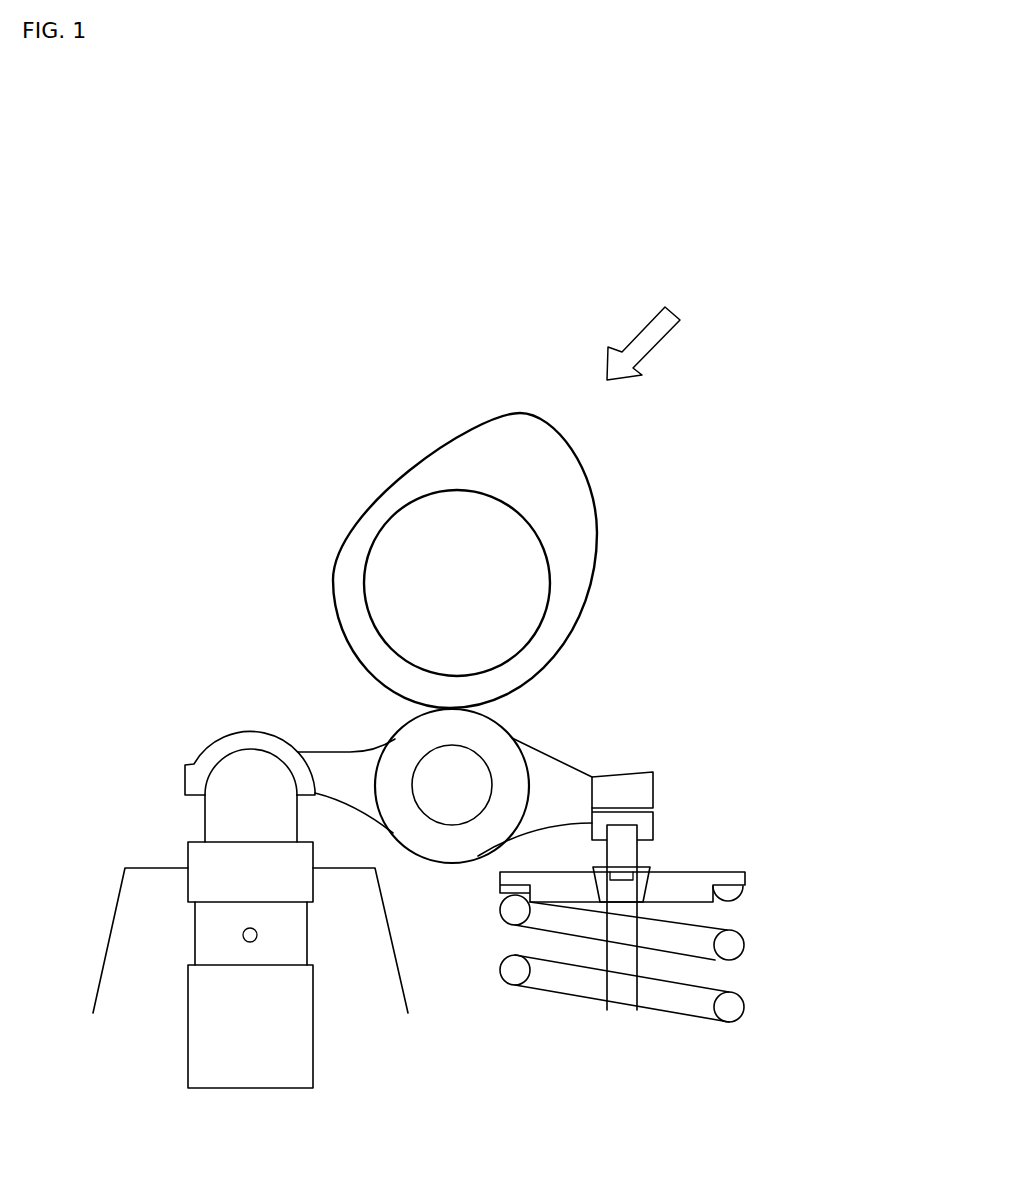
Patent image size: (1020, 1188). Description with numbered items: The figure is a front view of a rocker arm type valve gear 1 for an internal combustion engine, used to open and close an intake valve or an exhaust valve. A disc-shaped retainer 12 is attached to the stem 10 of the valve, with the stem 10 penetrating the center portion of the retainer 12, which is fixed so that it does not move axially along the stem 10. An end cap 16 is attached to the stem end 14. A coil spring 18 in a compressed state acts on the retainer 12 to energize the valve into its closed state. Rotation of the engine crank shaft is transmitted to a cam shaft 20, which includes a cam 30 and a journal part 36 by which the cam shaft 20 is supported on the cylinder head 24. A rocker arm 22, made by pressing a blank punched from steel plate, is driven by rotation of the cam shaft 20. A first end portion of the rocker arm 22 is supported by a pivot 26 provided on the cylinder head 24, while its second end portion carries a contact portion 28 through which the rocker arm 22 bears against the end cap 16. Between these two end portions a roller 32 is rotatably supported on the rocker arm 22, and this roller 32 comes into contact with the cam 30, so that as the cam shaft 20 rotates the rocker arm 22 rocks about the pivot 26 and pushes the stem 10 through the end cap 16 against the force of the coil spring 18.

The valve gear 1 is at (650, 330).
The stem 10 is at (605, 1007).
The retainer 12 is at (745, 878).
The stem end 14 is at (637, 856).
The end cap 16 is at (653, 823).
The coil spring 18 is at (747, 943).
The cam shaft 20 is at (503, 407).
The rocker arm 22 is at (567, 760).
The cylinder head 24 is at (120, 880).
The pivot 26 is at (172, 818).
The contact portion 28 is at (653, 780).
The cam 30 is at (590, 477).
The roller 32 is at (497, 720).
The journal part 36 is at (557, 583).